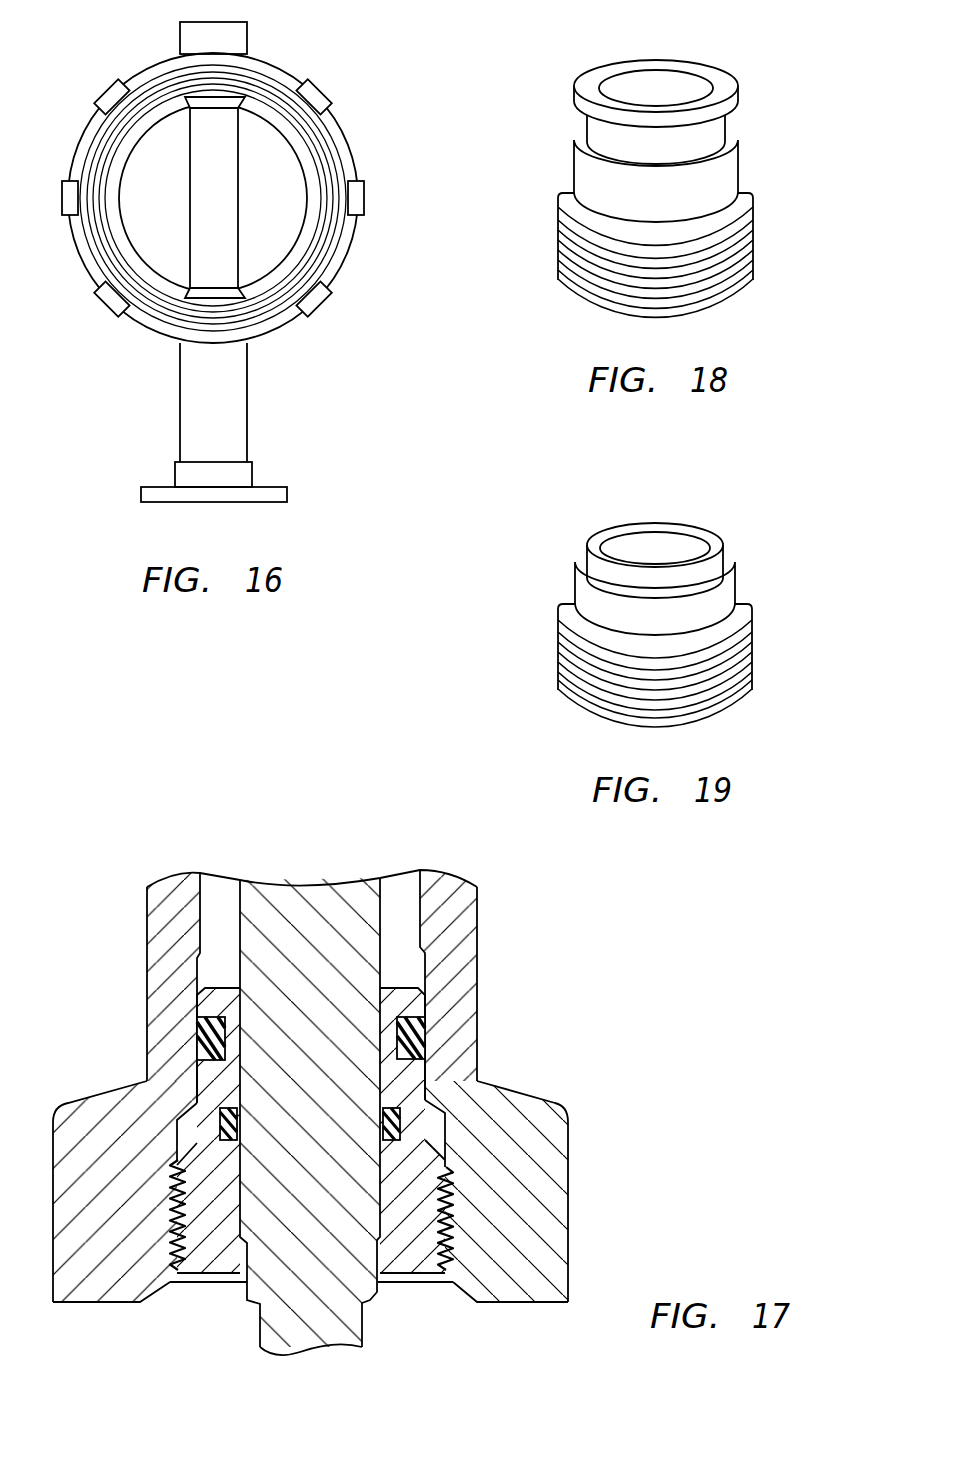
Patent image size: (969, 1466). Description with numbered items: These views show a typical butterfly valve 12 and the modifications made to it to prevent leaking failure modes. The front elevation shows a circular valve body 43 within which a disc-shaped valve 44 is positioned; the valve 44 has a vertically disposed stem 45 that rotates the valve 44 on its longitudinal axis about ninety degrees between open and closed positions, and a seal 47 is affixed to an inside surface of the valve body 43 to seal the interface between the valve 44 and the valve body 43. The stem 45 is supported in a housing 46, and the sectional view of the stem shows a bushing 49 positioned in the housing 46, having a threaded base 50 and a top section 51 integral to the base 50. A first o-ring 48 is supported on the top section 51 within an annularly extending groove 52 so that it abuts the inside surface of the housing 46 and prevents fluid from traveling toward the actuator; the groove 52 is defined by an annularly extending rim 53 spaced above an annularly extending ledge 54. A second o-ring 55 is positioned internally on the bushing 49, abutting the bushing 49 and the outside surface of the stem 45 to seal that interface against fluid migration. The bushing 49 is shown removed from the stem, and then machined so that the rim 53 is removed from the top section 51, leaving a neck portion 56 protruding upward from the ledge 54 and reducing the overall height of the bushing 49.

In FIG. 16, the butterfly valve 12 is at (218, 261).
In FIG. 16, the valve body 43 is at (350, 143).
In FIG. 16, the valve 44 is at (153, 225).
In FIG. 16, the stem 45 is at (238, 200).
In FIG. 17, the stem 45 is at (300, 917).
In FIG. 16, the housing 46 is at (182, 400).
In FIG. 17, the housing 46 is at (160, 947).
In FIG. 16, the seal 47 is at (260, 285).
In FIG. 17, the first o-ring 48 is at (200, 1030).
In FIG. 18, the bushing 49 is at (663, 167).
In FIG. 17, the bushing 49 is at (410, 968).
In FIG. 18, the threaded base 50 is at (753, 236).
In FIG. 19, the threaded base 50 is at (753, 648).
In FIG. 17, the threaded base 50 is at (447, 1193).
In FIG. 18, the top section 51 is at (737, 167).
In FIG. 19, the top section 51 is at (737, 580).
In FIG. 18, the groove 52 is at (737, 122).
In FIG. 18, the rim 53 is at (577, 97).
In FIG. 18, the ledge 54 is at (580, 143).
In FIG. 19, the ledge 54 is at (583, 568).
In FIG. 17, the second o-ring 55 is at (222, 1118).
In FIG. 19, the neck portion 56 is at (710, 532).